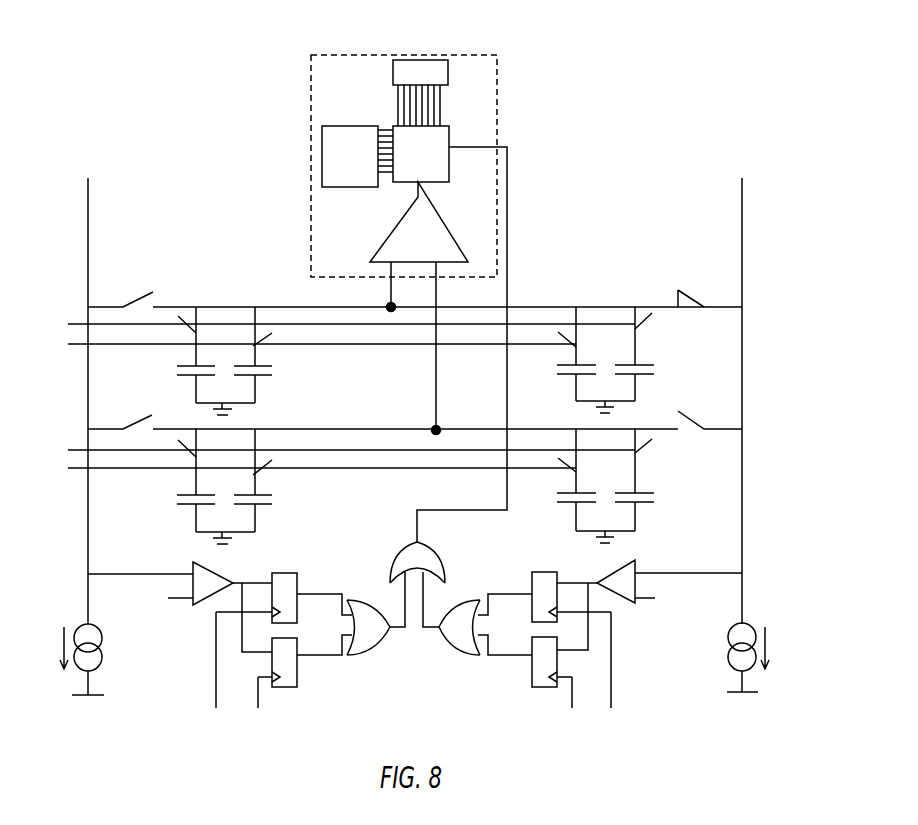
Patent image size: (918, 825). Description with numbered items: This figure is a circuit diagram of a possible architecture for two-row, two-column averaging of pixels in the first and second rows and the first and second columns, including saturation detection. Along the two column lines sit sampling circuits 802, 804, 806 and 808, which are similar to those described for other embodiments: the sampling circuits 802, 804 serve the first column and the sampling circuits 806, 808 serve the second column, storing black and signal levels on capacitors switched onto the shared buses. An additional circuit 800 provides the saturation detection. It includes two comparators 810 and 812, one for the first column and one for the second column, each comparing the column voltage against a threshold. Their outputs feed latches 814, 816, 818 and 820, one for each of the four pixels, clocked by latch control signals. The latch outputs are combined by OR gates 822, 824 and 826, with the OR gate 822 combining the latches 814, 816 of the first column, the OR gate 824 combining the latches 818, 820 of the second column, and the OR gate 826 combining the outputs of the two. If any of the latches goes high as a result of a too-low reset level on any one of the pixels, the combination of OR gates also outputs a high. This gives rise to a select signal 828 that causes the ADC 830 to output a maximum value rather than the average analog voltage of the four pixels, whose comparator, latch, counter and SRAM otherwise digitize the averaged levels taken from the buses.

The additional circuit 800 is at (68, 593).
The sampling circuit 802 is at (145, 384).
The sampling circuit 804 is at (130, 496).
The sampling circuit 806 is at (640, 349).
The sampling circuit 808 is at (640, 477).
The comparator 810 is at (180, 604).
The comparator 812 is at (652, 604).
The latch 814 is at (290, 568).
The latch 816 is at (300, 660).
The latch 818 is at (540, 566).
The latch 820 is at (540, 689).
The OR gate 822 is at (375, 598).
The OR gate 824 is at (458, 655).
The OR gate 826 is at (440, 549).
The select signal 828 is at (515, 287).
The ADC 830 is at (497, 65).